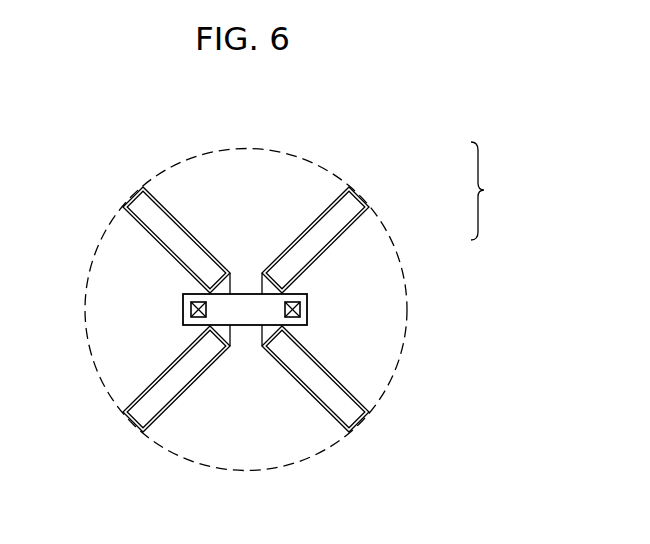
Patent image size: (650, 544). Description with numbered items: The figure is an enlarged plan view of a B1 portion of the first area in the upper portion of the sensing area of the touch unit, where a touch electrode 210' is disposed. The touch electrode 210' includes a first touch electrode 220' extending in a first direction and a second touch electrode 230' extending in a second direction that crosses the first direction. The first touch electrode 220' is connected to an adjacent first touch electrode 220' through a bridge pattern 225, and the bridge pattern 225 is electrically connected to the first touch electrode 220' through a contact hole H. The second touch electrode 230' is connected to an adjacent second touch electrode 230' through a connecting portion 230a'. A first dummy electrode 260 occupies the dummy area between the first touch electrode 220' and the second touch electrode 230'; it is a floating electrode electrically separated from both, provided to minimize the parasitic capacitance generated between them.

The B1 portion B1 is at (293, 152).
The first dummy electrode 260 is at (136, 199).
The second touch electrode 230' is at (364, 221).
The first touch electrode 220' is at (366, 240).
The touch electrode 210' is at (494, 191).
The connecting portion 230a' is at (181, 424).
The bridge pattern 225 is at (254, 315).
The contact hole H is at (183, 307).